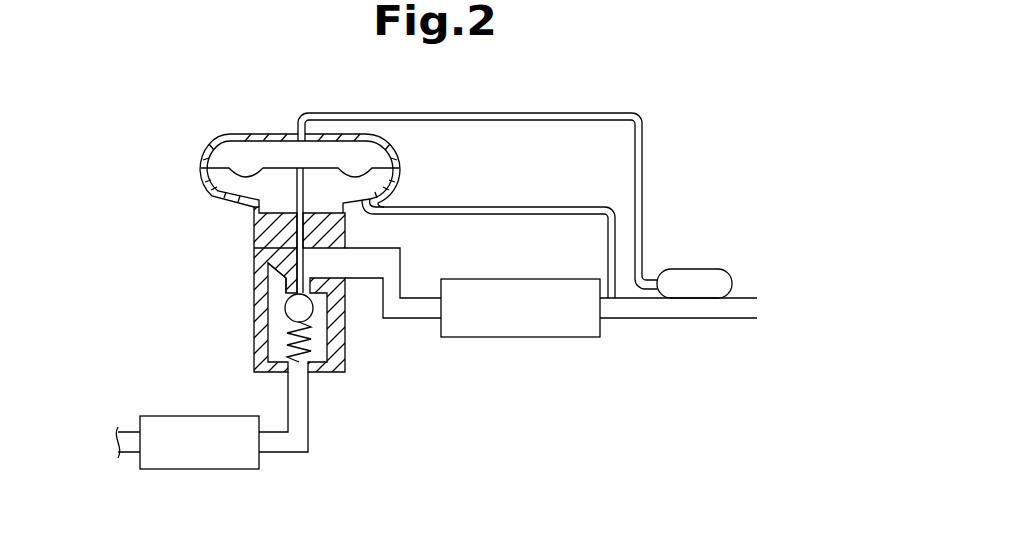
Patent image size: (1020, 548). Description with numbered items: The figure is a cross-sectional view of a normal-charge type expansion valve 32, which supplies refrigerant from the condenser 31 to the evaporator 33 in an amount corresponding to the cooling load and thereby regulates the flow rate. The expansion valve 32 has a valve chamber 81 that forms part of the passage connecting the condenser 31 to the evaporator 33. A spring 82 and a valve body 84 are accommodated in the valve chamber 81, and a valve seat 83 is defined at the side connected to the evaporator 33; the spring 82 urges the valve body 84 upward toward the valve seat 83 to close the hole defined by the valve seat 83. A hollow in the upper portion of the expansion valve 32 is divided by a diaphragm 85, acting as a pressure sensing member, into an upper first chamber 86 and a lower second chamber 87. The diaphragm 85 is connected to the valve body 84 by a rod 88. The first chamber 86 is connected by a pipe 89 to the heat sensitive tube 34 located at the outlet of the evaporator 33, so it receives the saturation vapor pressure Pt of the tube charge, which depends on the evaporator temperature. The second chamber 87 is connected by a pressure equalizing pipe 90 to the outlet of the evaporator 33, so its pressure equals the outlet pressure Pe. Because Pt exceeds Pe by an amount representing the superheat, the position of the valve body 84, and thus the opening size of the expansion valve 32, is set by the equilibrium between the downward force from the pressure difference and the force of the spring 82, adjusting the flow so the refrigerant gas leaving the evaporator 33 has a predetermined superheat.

The condenser 31 is at (168, 416).
The expansion valve 32 is at (327, 90).
The evaporator 33 is at (526, 279).
The heat sensitive tube 34 is at (697, 269).
The valve chamber 81 is at (277, 335).
The spring 82 is at (307, 343).
The valve seat 83 is at (285, 289).
The valve body 84 is at (290, 308).
The diaphragm 85 is at (278, 168).
The first chamber 86 is at (216, 153).
The second chamber 87 is at (212, 192).
The rod 88 is at (298, 258).
The pipe 89 is at (482, 113).
The pressure equalizing pipe 90 is at (468, 207).